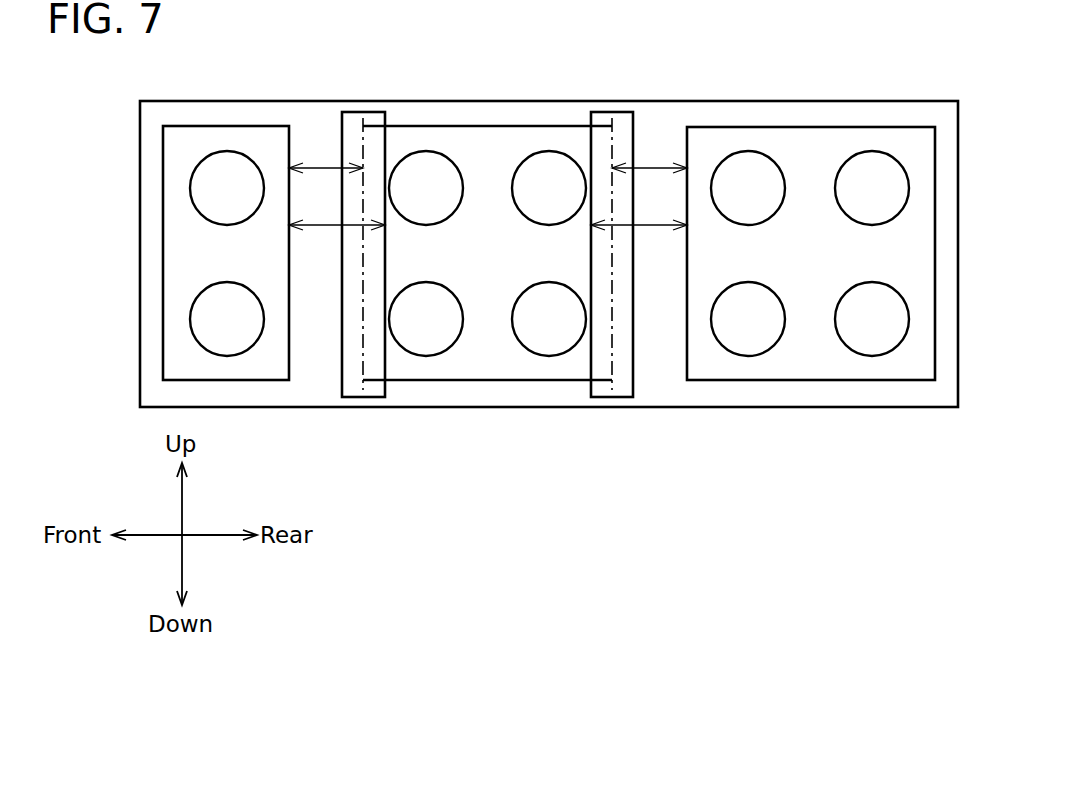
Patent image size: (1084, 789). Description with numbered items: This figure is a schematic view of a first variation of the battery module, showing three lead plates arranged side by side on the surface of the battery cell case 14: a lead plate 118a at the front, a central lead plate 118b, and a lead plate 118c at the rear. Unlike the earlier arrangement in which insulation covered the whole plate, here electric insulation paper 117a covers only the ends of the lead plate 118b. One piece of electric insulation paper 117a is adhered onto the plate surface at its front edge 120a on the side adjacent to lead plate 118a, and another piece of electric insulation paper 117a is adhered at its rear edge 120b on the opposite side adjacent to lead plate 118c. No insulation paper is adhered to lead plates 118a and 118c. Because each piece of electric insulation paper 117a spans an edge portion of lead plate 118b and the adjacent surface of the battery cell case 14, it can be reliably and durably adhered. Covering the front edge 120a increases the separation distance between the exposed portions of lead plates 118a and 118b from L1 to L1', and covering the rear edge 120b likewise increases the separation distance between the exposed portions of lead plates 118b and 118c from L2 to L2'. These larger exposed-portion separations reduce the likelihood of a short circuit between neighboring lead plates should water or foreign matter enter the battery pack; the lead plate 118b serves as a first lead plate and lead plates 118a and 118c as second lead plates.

The battery cell case 14 is at (203, 101).
The lead plate 118a is at (265, 363).
The lead plate 118b is at (459, 363).
The lead plate 118c is at (803, 363).
The electric insulation paper 117a is at (353, 383).
The end (front edge) of lead plate 120a is at (373, 140).
The end (rear edge) of lead plate 120b is at (603, 140).
The separation distance L1 is at (326, 105).
The increased separation distance L1' is at (321, 133).
The separation distance L2 is at (649, 105).
The increased separation distance L2' is at (660, 133).